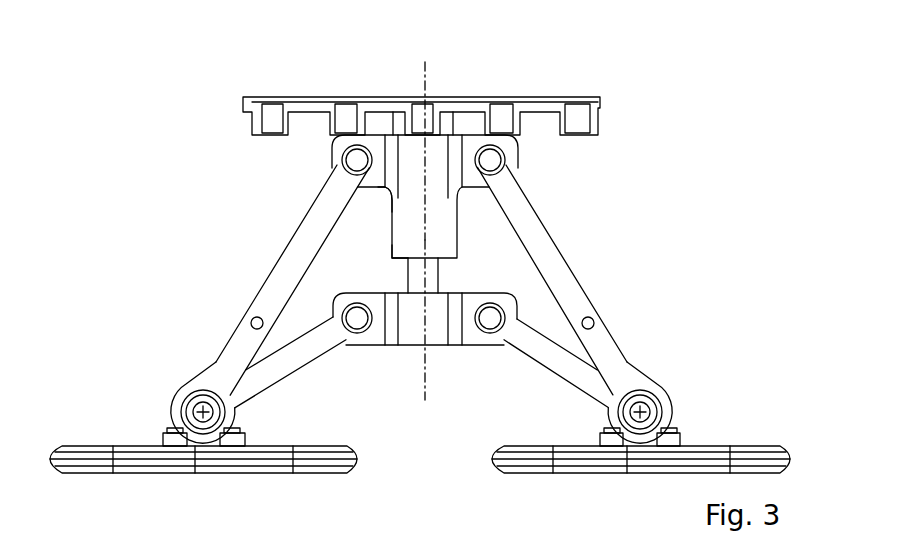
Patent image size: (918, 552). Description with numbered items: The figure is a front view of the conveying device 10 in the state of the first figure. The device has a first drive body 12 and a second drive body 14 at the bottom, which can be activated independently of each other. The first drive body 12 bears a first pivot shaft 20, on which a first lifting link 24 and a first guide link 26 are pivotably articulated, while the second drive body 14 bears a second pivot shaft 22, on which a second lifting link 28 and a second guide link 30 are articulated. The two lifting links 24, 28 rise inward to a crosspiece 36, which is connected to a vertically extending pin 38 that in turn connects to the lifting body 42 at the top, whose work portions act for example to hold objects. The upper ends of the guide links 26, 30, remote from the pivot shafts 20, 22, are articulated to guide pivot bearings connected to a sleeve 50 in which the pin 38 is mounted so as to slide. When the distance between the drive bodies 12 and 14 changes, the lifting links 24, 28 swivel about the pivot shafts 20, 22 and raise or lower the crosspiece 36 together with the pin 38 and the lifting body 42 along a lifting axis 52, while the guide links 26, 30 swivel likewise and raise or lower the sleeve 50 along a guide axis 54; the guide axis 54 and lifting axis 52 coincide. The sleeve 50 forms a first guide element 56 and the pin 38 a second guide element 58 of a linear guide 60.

The conveying device 10 is at (665, 91).
The first drive body 12 is at (93, 473).
The second drive body 14 is at (662, 465).
The first pivot shaft 20 is at (197, 428).
The second pivot shaft 22 is at (637, 423).
The first lifting link 24 is at (293, 358).
The first guide link 26 is at (293, 256).
The second lifting link 28 is at (540, 353).
The second guide link 30 is at (558, 255).
The crosspiece 36 is at (468, 337).
The pin 38 is at (438, 276).
The lifting body 42 is at (530, 77).
The sleeve 50 is at (405, 221).
The lifting axis 52 is at (428, 400).
The guide axis 54 is at (426, 78).
The first guide element 56 is at (374, 210).
The second guide element 58 is at (392, 278).
The linear guide 60 is at (240, 148).